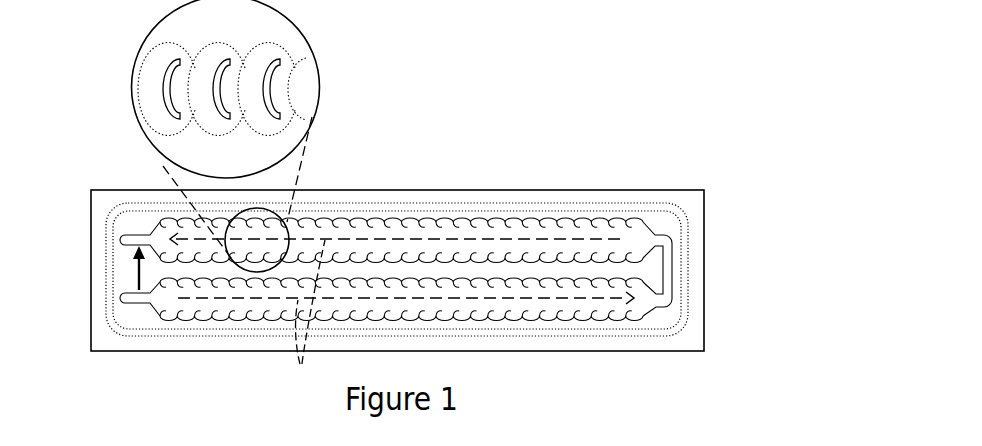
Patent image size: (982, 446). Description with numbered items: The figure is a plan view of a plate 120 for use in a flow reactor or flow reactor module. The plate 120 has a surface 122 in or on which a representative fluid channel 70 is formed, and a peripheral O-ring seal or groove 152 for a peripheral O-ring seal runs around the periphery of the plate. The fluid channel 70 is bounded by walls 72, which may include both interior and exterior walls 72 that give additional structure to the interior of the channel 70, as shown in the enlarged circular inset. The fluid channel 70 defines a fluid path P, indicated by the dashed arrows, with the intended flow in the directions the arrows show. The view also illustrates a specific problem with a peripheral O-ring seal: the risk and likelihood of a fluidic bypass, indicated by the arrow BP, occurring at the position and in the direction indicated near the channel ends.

The fluid channel 70 is at (213, 33).
The walls 72 is at (172, 44).
The plate 120 is at (610, 352).
The surface 122 is at (701, 350).
The peripheral O-ring seal or groove 152 is at (688, 292).
The fluidic bypass BP is at (137, 280).
The fluid path P is at (302, 365).